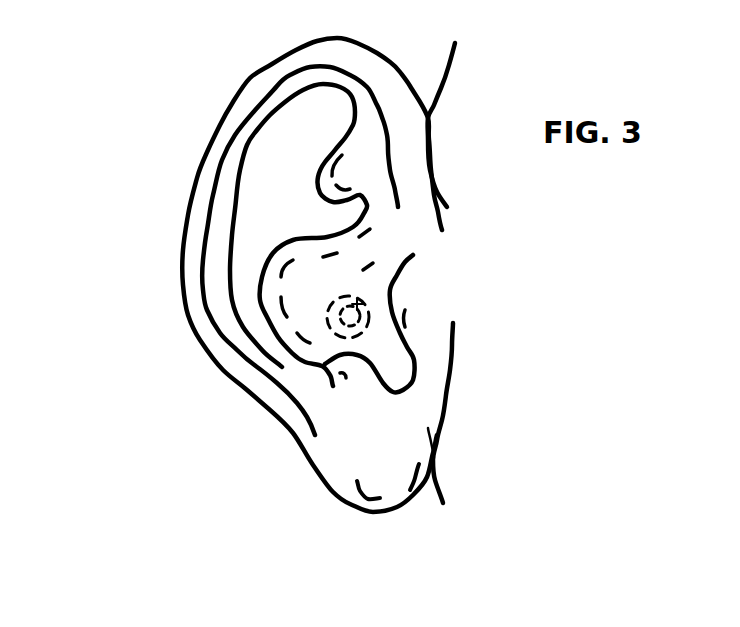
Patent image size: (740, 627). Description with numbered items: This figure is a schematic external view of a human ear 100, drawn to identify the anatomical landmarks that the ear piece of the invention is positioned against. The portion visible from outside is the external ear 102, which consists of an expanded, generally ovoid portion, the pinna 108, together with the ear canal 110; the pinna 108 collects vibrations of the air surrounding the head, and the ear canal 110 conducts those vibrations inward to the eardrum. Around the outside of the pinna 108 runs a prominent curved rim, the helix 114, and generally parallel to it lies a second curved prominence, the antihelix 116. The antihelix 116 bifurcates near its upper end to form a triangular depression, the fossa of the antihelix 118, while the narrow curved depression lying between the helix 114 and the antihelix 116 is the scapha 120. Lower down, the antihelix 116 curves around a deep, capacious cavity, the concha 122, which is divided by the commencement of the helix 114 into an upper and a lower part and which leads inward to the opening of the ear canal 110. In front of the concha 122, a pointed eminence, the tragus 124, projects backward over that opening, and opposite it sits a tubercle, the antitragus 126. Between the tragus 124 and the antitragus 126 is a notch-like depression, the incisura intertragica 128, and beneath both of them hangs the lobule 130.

The ear 100 is at (146, 265).
The external ear 102 is at (212, 408).
The pinna 108 is at (318, 127).
The ear canal 110 is at (362, 303).
The helix 114 is at (227, 127).
The antihelix 116 is at (262, 190).
The fossa of the antihelix 118 is at (353, 167).
The scapha 120 is at (237, 163).
The concha 122 is at (320, 272).
The tragus 124 is at (412, 316).
The antitragus 126 is at (353, 372).
The incisura intertragica 128 is at (390, 376).
The lobule 130 is at (388, 473).